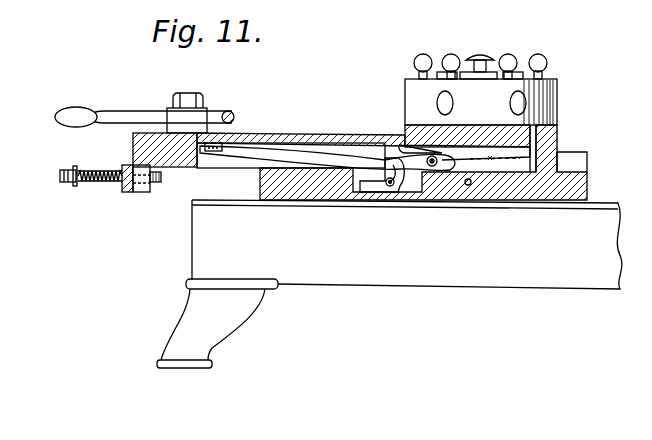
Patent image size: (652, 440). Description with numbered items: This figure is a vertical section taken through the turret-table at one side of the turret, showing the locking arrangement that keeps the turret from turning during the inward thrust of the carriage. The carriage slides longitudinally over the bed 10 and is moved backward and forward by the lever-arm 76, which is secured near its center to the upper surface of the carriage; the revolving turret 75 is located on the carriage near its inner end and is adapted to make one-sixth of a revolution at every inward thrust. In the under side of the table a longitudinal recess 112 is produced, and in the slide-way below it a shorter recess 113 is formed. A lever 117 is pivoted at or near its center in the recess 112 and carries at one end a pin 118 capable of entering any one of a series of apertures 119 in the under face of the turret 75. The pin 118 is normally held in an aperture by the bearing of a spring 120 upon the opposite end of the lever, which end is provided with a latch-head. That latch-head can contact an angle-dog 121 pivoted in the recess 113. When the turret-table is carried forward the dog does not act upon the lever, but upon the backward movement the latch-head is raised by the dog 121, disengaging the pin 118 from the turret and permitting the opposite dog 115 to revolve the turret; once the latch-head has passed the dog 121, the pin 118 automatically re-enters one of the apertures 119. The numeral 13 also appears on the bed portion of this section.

The bed 10 is at (389, 284).
The screw 13 is at (546, 194).
The revolving turret 75 is at (496, 100).
The lever-arm 76 is at (144, 113).
The longitudinal recess 112 is at (259, 151).
The shorter recess 113 is at (392, 175).
The angle-dog 115 is at (588, 188).
The lever 117 is at (410, 151).
The pin 118 is at (557, 138).
The apertures 119 is at (556, 119).
The spring 120 is at (290, 144).
The angle-dog 121 is at (387, 195).